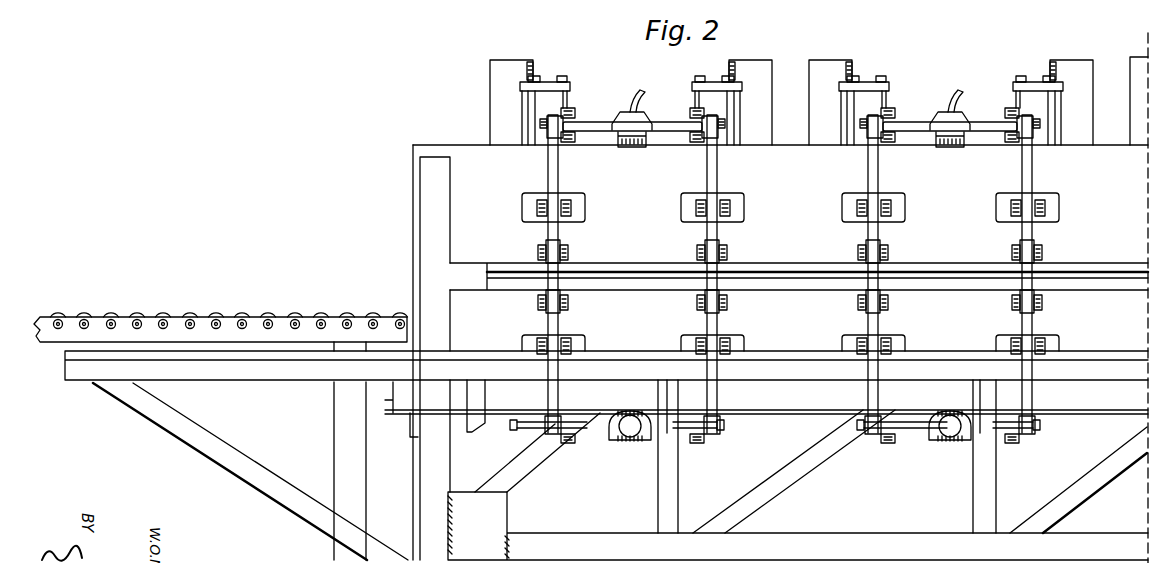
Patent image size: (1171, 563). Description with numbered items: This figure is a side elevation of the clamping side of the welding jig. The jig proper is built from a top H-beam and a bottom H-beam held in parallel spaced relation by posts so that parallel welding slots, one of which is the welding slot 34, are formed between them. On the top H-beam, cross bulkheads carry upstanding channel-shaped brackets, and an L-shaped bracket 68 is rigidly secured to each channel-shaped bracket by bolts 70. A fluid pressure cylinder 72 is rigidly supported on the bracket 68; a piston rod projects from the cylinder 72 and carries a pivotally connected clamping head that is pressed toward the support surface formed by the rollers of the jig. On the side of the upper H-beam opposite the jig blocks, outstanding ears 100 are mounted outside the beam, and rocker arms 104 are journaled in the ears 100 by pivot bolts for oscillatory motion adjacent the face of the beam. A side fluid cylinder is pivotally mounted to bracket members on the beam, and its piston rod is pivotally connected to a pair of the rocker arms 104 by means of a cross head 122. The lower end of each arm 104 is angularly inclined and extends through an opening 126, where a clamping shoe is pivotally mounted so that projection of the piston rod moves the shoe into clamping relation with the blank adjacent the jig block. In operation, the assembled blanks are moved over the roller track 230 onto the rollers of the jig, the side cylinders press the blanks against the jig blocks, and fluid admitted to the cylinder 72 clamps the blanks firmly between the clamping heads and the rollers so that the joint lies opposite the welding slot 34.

The bolts 70 is at (535, 66).
The L-shaped bracket 68 is at (550, 84).
The fluid pressure cylinder 72 is at (570, 106).
The cross head 122 is at (674, 132).
The rocker arms 104 is at (714, 174).
The outstanding ears 100 is at (735, 208).
The opening 126 is at (722, 244).
The welding slot 34 is at (510, 283).
The roller track 230 is at (257, 317).